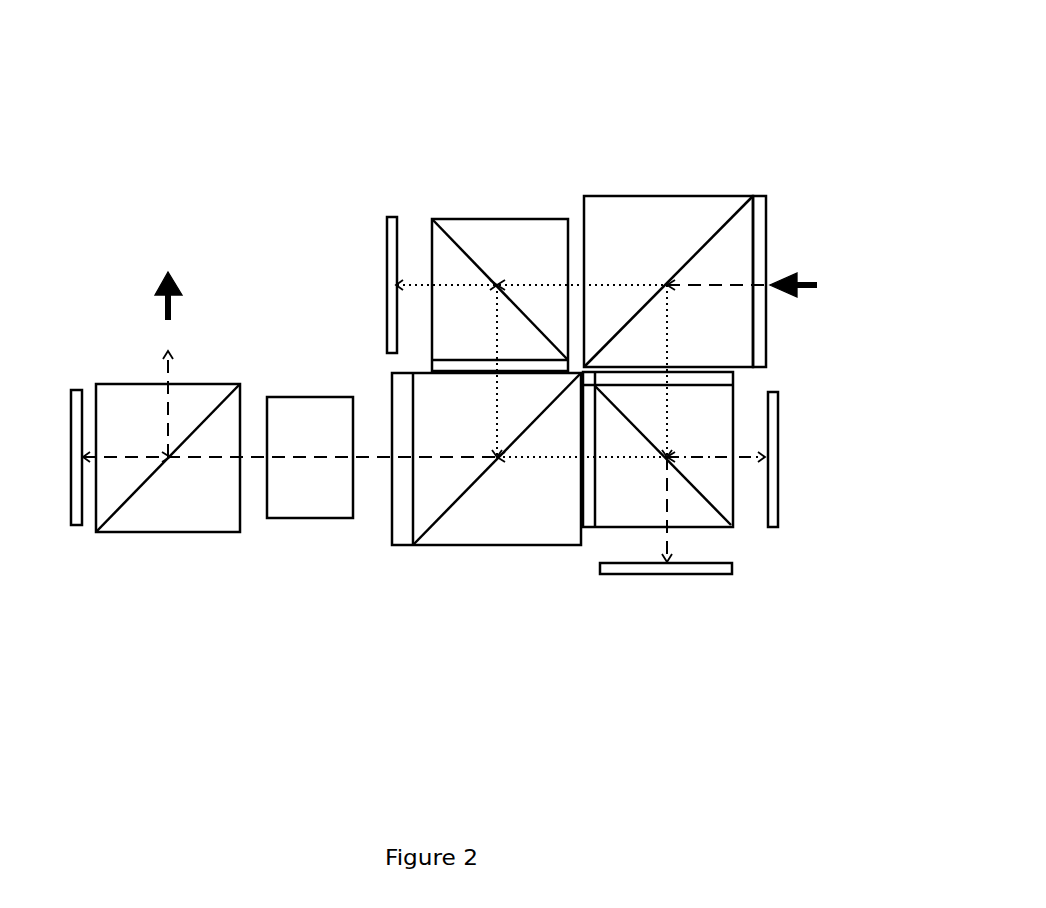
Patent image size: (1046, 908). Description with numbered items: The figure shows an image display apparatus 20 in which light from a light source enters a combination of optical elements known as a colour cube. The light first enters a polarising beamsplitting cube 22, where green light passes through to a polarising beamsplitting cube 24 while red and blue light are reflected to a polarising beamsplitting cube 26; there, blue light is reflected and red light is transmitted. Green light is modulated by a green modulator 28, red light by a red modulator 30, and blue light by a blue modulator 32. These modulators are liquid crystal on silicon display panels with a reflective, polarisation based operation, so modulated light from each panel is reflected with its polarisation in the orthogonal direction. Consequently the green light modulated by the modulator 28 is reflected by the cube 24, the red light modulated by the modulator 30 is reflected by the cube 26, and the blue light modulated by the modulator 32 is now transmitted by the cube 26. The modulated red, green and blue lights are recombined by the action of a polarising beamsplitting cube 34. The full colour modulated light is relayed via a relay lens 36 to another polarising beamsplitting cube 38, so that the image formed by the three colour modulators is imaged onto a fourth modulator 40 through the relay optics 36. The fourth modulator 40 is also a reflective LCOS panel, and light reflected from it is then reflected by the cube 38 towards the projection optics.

The image display apparatus 20 is at (177, 102).
The polarising beamsplitting cube 22 is at (740, 208).
The polarising beamsplitting cube 24 is at (453, 230).
The polarising beamsplitting cube 26 is at (717, 522).
The green modulator 28 is at (387, 252).
The red modulator 30 is at (617, 575).
The blue modulator 32 is at (779, 502).
The polarising beamsplitting cube 34 is at (440, 517).
The relay lens 36 is at (288, 518).
The polarising beamsplitting cube 38 is at (110, 517).
The fourth modulator 40 is at (71, 492).